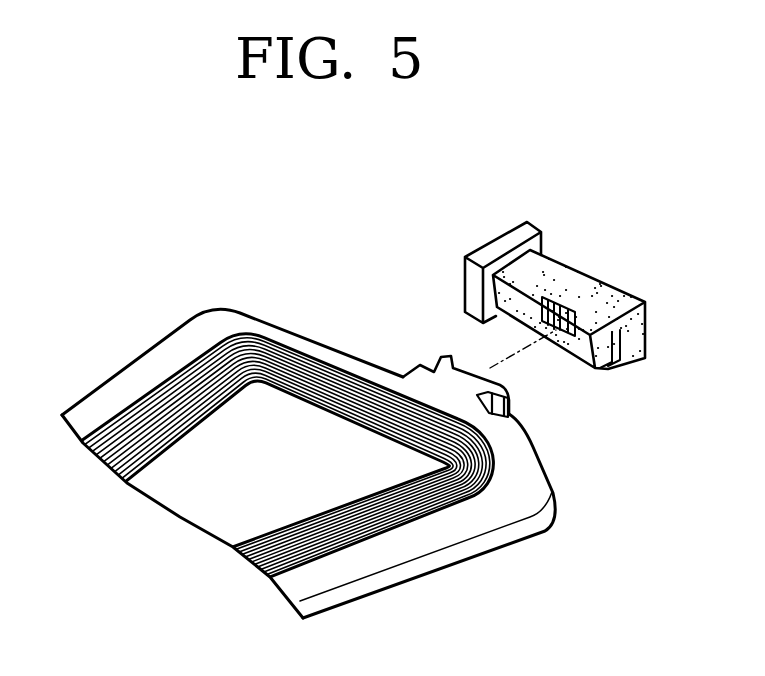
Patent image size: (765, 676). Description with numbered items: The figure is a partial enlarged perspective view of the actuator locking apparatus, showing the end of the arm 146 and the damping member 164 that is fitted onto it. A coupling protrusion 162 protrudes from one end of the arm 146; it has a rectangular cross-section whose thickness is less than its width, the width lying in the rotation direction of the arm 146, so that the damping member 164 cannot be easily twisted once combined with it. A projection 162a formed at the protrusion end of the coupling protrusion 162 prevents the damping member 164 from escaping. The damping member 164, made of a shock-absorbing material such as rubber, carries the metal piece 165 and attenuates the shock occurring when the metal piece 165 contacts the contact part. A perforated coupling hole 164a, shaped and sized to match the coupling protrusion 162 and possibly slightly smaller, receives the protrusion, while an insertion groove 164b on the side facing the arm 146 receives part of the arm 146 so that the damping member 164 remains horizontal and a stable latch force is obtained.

The arm 146 is at (437, 537).
The coupling protrusion 162 is at (467, 373).
The projection 162a is at (508, 408).
The damping member 164 is at (584, 270).
The coupling hole 164a is at (597, 295).
The insertion groove 164b is at (596, 371).
The metal piece 165 is at (498, 242).